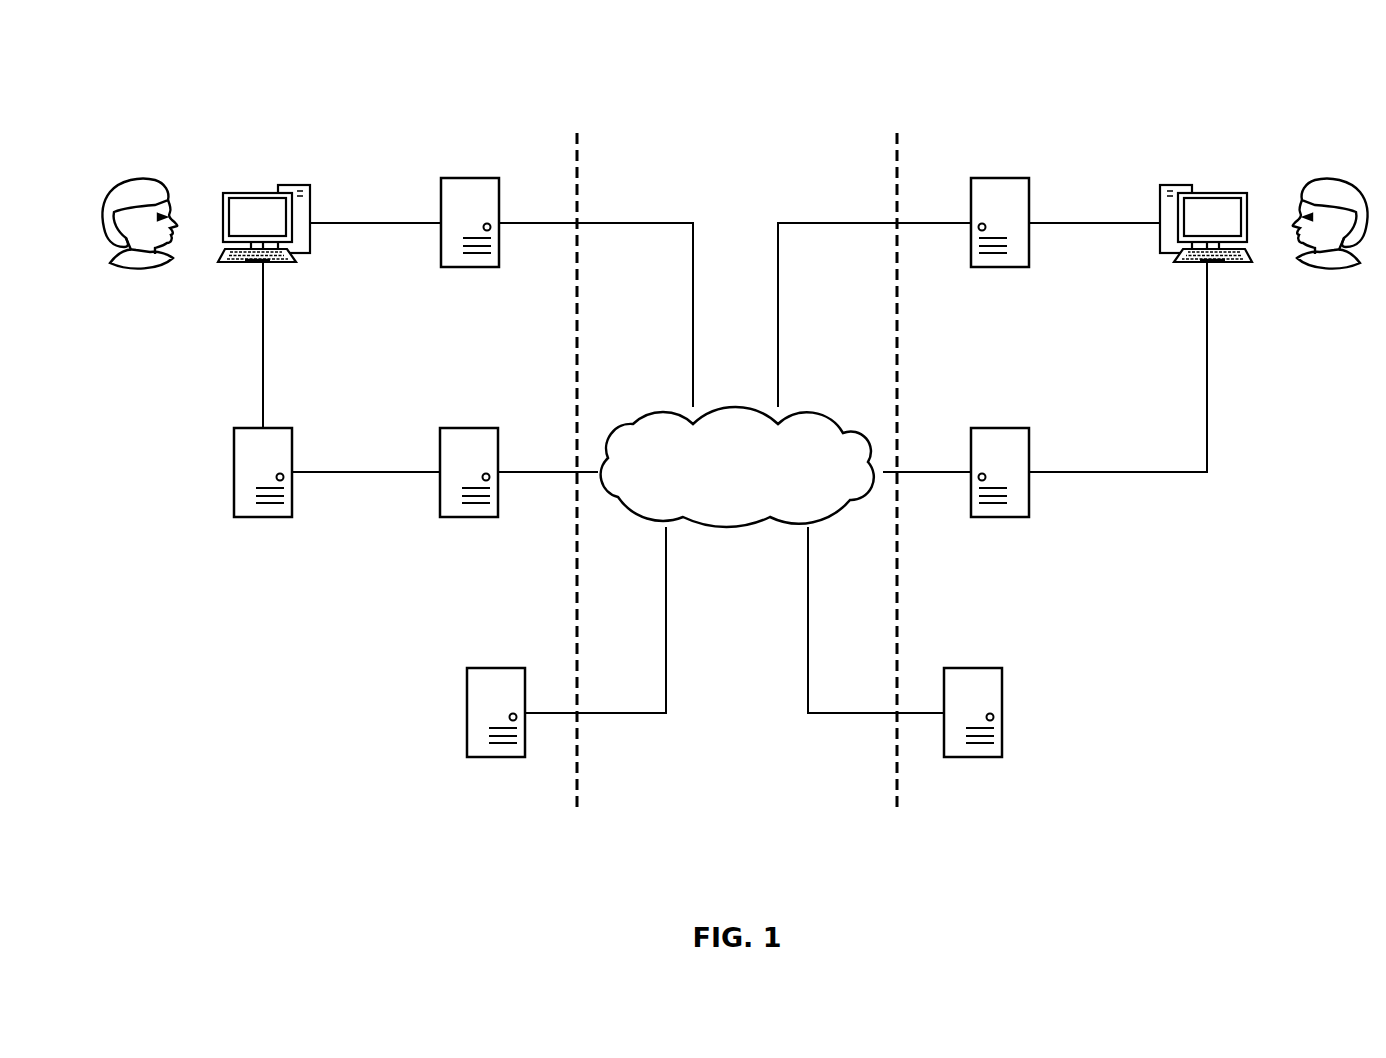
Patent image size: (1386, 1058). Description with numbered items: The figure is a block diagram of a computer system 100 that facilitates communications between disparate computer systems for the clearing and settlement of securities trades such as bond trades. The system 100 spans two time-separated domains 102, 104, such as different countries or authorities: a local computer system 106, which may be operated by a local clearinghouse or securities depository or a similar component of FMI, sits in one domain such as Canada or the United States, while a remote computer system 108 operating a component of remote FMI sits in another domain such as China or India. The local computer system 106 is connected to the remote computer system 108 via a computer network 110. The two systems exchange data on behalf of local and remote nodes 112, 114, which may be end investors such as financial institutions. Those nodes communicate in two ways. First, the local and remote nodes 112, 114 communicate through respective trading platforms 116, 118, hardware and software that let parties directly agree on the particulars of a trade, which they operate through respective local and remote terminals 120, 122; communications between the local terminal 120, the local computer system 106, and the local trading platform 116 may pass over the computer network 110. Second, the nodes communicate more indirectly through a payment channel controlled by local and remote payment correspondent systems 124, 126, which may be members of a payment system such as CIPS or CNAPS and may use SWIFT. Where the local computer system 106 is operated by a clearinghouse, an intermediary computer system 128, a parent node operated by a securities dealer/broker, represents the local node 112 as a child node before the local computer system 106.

The computer system 100 is at (628, 88).
The time-separated domain 102 is at (308, 615).
The time-separated domain 104 is at (1157, 615).
The local computer system 106 is at (469, 489).
The remote computer system 108 is at (1000, 489).
The computer network 110 is at (723, 478).
The local node 112 is at (139, 241).
The remote node 114 is at (1330, 241).
The local trading platform 116 is at (470, 239).
The remote trading platform 118 is at (1000, 239).
The local terminal 120 is at (264, 240).
The remote terminal 122 is at (1207, 240).
The local payment correspondent system 124 is at (496, 728).
The remote payment correspondent system 126 is at (973, 728).
The intermediary computer system 128 is at (263, 489).